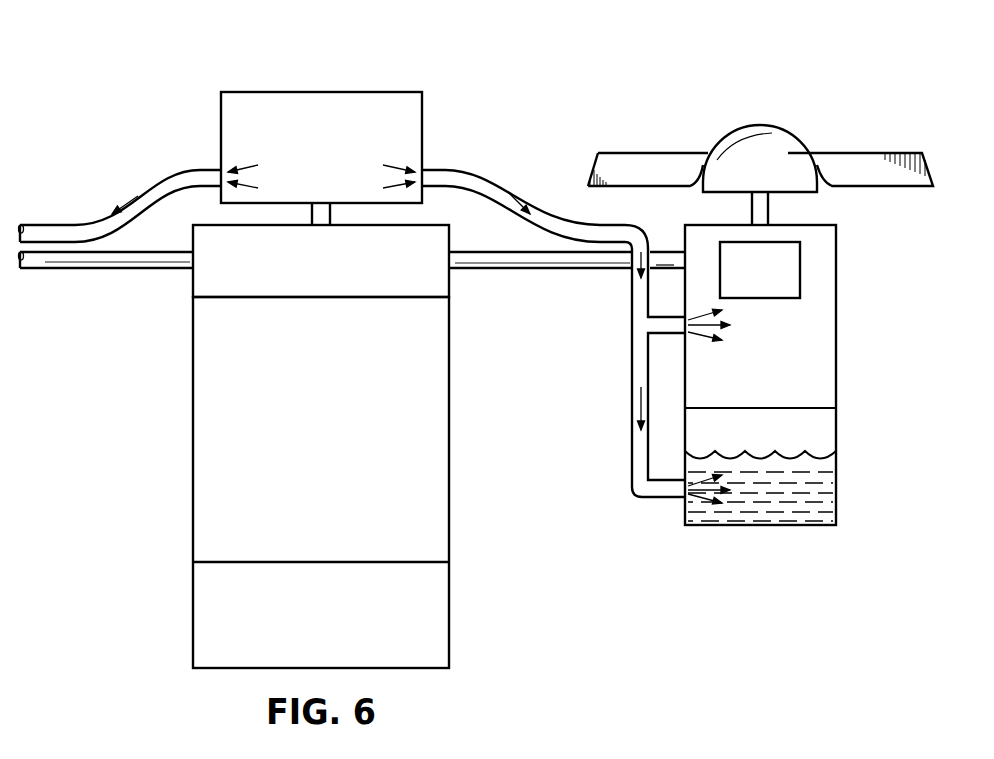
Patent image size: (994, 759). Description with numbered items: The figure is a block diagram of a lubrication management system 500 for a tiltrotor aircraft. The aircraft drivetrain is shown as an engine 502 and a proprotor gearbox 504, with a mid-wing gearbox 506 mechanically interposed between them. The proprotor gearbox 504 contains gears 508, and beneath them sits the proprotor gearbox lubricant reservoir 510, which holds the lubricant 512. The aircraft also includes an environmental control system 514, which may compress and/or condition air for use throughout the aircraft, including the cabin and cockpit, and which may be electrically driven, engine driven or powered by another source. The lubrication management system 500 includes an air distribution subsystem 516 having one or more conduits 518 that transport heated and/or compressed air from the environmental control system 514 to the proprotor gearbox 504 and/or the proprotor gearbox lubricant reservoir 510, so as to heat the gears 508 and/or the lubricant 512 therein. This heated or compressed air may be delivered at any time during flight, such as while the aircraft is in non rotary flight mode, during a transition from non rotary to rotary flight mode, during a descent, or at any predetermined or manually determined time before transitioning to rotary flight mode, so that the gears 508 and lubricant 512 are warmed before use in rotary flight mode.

The lubrication management system 500 is at (100, 70).
The engine 502 is at (200, 430).
The proprotor gearbox 504 is at (827, 317).
The mid-wing gearbox 506 is at (200, 284).
The gears 508 is at (765, 298).
The proprotor gearbox lubricant reservoir 510 is at (827, 430).
The lubricant 512 is at (827, 505).
The environmental control system 514 is at (319, 92).
The air distribution subsystem 516 is at (625, 337).
The conduits 518 is at (505, 186).